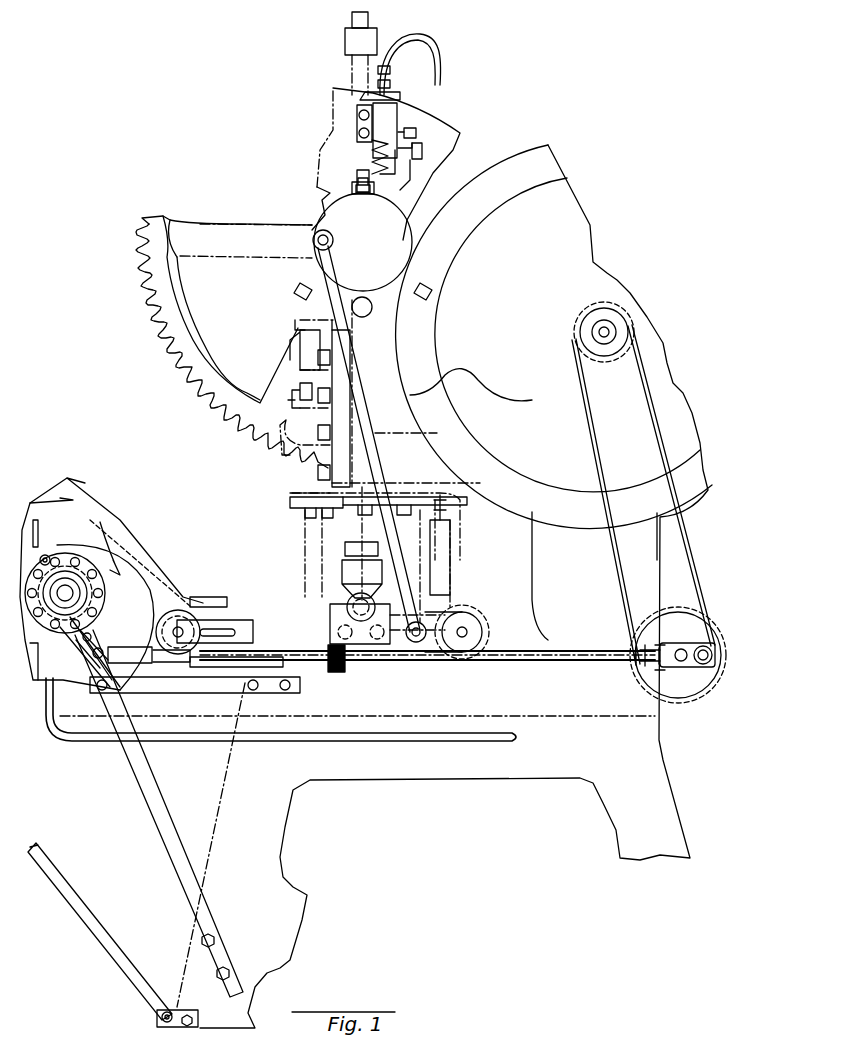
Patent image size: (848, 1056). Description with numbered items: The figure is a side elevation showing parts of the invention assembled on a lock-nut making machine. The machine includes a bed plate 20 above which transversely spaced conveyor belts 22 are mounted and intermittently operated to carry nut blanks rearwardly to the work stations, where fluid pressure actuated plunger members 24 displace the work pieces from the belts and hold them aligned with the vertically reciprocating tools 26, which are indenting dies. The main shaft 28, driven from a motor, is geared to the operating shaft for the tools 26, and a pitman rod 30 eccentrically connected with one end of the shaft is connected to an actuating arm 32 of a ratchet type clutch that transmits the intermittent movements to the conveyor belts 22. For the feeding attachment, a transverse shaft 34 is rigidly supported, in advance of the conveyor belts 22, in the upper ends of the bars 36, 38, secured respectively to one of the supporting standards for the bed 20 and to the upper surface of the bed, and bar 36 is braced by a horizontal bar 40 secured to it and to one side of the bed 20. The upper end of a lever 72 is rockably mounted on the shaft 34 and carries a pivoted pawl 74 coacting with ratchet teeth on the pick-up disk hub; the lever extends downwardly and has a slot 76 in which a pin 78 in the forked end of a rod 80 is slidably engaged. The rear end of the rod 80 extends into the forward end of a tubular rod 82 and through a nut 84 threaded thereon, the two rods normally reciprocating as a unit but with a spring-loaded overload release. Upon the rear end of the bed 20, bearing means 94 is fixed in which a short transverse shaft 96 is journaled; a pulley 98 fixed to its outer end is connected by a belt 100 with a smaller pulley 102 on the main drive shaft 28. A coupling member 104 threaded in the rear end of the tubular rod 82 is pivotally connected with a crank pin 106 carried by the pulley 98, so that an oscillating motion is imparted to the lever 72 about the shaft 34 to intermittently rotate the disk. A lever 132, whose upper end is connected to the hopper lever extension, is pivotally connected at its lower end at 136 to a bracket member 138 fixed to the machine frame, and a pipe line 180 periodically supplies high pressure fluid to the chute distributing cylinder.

The bed plate 20 is at (555, 700).
The conveyor belts 22 is at (462, 612).
The plunger members 24 is at (368, 606).
The tools 26 is at (350, 573).
The main shaft 28 is at (606, 330).
The pitman rod 30 is at (448, 393).
The actuating arm 32 is at (430, 642).
The transverse shaft 34 is at (70, 592).
The bar 36 is at (145, 770).
The bar 38 is at (217, 668).
The horizontal bar 40 is at (240, 700).
The lever 72 is at (82, 637).
The pawl 74 is at (50, 560).
The slot 76 is at (83, 653).
The pin 78 is at (118, 663).
The rod 80 is at (270, 652).
The tubular rod 82 is at (543, 655).
The nut 84 is at (338, 672).
The bearing means 94 is at (683, 662).
The transverse shaft 96 is at (690, 663).
The pulley 98 is at (692, 612).
The belt 100 is at (705, 560).
The pulley 102 is at (612, 354).
The coupling member 104 is at (655, 660).
The crank pin 106 is at (712, 653).
The lever 132 is at (70, 893).
The pivotal connection 136 is at (167, 1012).
The bracket member 138 is at (185, 1010).
The pipe line 180 is at (345, 742).